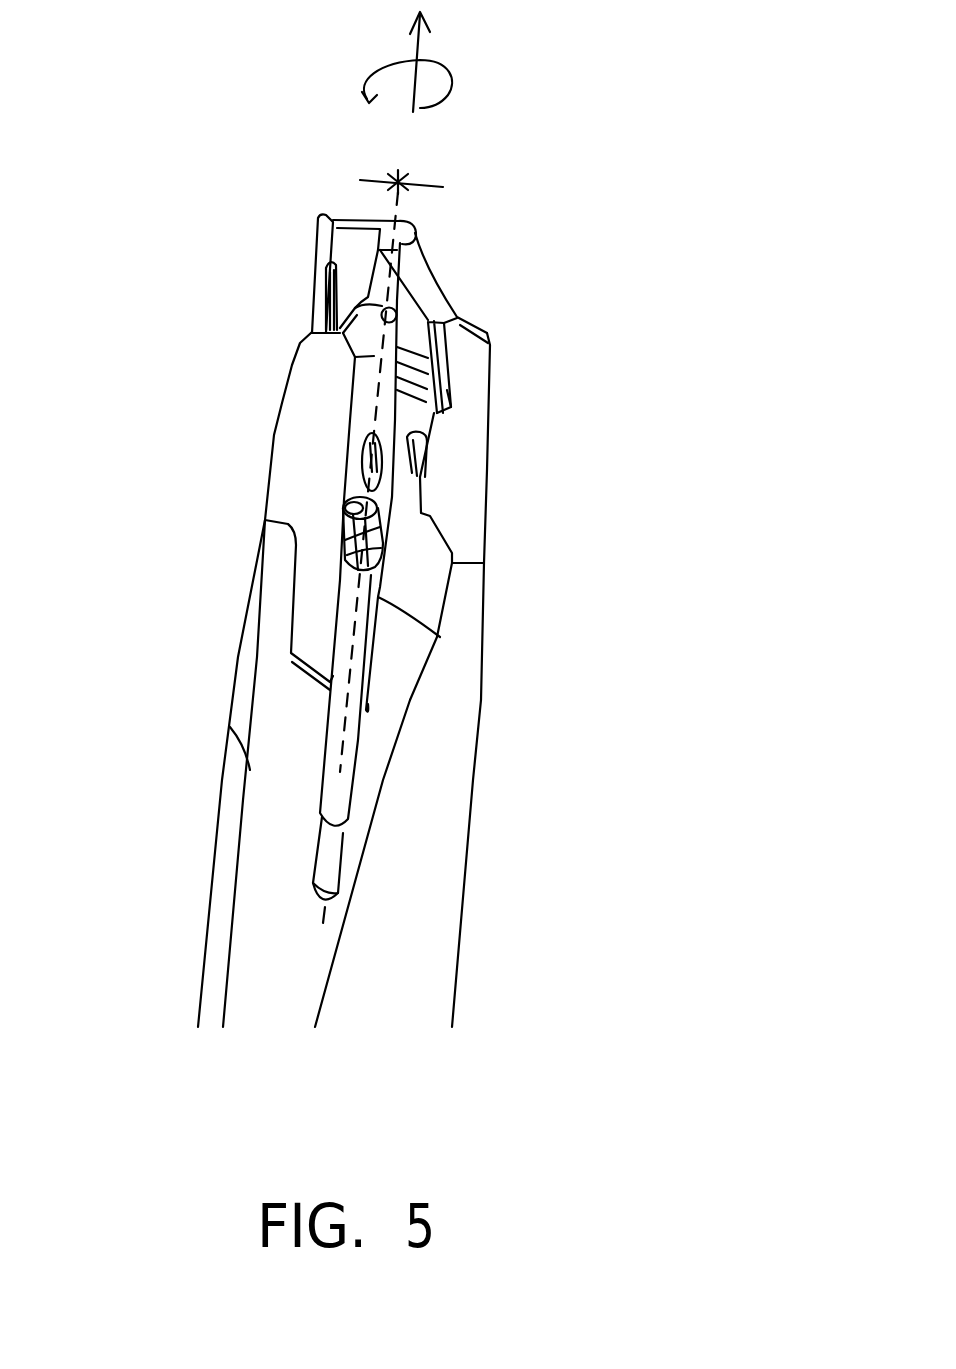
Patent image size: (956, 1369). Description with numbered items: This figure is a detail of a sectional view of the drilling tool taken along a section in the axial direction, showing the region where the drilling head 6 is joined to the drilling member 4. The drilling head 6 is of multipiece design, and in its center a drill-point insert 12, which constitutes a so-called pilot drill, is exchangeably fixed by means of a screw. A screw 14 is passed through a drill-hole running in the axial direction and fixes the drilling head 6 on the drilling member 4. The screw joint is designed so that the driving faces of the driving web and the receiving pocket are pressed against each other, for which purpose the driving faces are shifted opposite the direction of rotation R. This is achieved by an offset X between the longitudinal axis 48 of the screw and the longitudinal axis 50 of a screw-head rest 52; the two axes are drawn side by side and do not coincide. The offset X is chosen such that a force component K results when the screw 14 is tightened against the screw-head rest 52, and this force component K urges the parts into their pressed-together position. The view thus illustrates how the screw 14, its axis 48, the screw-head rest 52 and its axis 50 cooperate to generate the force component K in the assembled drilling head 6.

The drilling member 4 is at (478, 828).
The drilling head 6 is at (494, 432).
The drill-point insert 12 is at (427, 283).
The screw 14 is at (360, 618).
The longitudinal axis of the screw 48 is at (375, 468).
The longitudinal axis of the screw-head rest 50 is at (373, 425).
The screw-head rest 52 is at (366, 555).
The force component K is at (325, 611).
The offset X is at (430, 184).
The direction of rotation R is at (380, 63).